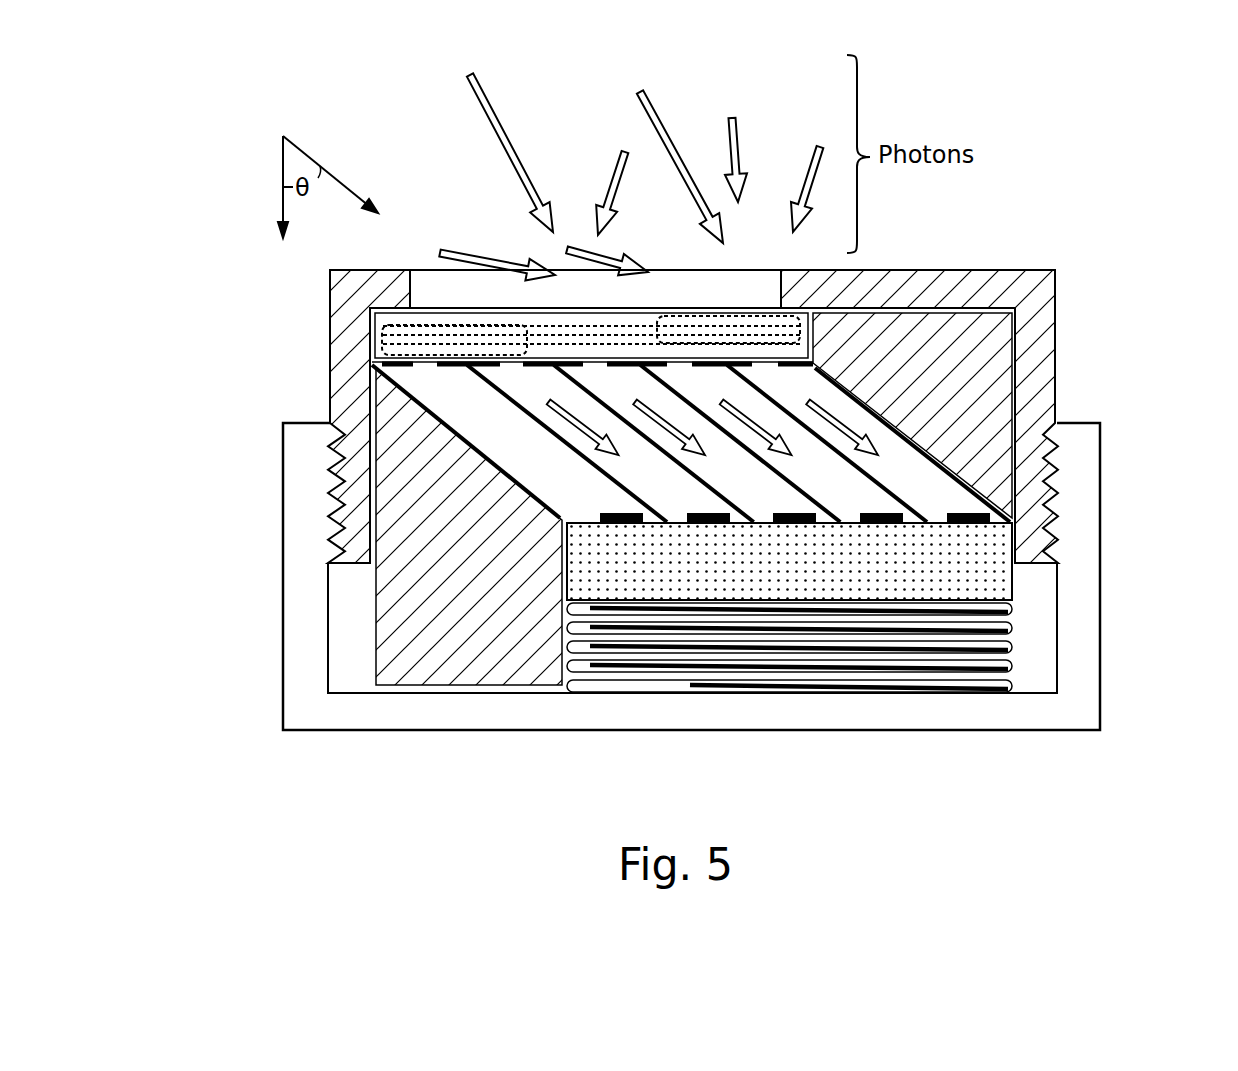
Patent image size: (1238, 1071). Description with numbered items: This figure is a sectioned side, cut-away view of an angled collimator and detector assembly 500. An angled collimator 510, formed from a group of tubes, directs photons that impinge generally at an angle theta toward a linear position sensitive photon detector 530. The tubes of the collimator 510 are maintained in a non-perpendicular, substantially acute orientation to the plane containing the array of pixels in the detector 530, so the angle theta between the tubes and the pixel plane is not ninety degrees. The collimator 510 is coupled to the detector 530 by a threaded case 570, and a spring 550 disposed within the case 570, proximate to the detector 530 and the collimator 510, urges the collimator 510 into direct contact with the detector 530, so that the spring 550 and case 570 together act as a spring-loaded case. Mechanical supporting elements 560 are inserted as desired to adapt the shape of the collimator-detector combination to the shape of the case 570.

The angled collimator and detector assembly 500 is at (1100, 248).
The angled collimator 510 is at (943, 463).
The detector 530 is at (1012, 585).
The spring 550 is at (706, 318).
The mechanical supporting elements 560 is at (983, 383).
The threaded case 570 is at (246, 730).